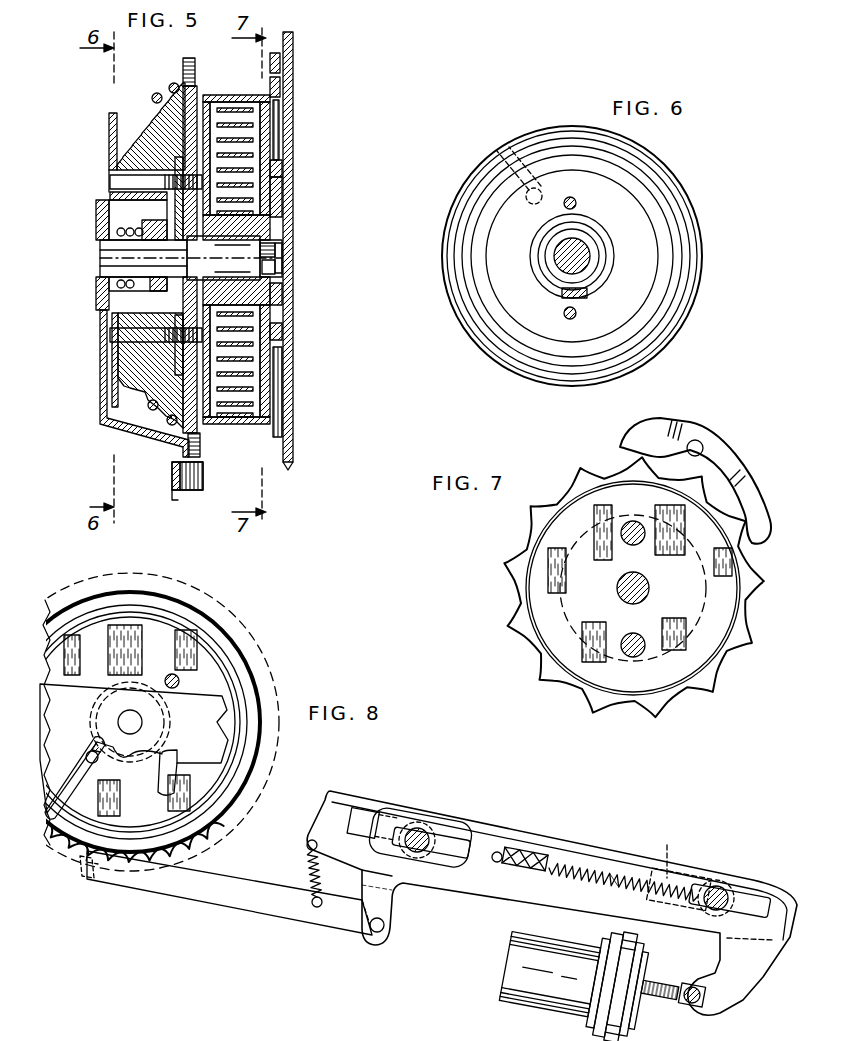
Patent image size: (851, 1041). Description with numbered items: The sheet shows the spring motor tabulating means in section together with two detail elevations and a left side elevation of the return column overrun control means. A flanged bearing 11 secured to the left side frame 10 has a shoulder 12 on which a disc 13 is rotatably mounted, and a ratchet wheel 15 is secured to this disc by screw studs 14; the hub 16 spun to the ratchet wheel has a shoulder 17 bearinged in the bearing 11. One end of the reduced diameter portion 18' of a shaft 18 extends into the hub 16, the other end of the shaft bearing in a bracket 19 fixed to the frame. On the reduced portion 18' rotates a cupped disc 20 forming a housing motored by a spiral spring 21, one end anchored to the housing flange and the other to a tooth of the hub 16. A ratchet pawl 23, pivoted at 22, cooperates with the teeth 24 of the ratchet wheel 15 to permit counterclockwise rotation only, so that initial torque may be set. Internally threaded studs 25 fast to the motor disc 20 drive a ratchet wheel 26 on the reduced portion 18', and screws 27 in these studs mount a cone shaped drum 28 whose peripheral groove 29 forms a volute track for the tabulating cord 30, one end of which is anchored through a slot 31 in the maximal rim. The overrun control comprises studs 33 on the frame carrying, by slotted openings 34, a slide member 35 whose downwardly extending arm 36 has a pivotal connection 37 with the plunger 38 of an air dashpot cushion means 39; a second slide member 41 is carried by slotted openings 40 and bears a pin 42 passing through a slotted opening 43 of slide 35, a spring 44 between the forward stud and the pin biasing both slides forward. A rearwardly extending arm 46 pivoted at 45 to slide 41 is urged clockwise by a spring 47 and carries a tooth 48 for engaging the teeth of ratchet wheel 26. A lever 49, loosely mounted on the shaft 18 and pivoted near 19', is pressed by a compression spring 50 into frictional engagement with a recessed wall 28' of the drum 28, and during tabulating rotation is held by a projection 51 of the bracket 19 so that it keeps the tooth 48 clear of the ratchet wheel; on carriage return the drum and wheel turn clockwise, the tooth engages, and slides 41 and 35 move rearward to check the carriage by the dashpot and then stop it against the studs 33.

In FIG. 5, the left side frame 10 is at (293, 408).
In FIG. 5, the flanged bearing 11 is at (282, 200).
In FIG. 5, the shoulder 12 is at (282, 268).
In FIG. 5, the disc 13 is at (282, 292).
In FIG. 5, the screw studs 14 is at (282, 170).
In FIG. 7, the screw studs 14 is at (615, 520).
In FIG. 5, the ratchet wheel 15 is at (276, 110).
In FIG. 7, the ratchet wheel 15 is at (560, 537).
In FIG. 5, the hub 16 is at (270, 226).
In FIG. 5, the shoulder 17 is at (275, 248).
In FIG. 5, the shaft 18 is at (171, 258).
In FIG. 6, the shaft 18 is at (561, 256).
In FIG. 8, the shaft 18 is at (130, 700).
In FIG. 5, the reduced diameter portion 18' is at (314, 253).
In FIG. 7, the reduced diameter portion 18' is at (656, 588).
In FIG. 5, the bracket 19 is at (113, 240).
In FIG. 8, the bracket 19 is at (134, 725).
In FIG. 8, the pivot 19' is at (76, 745).
In FIG. 5, the cupped disc 20 is at (242, 78).
In FIG. 5, the spiral spring 21 is at (248, 135).
In FIG. 7, the pivot 22 is at (705, 448).
In FIG. 5, the ratchet pawl 23 is at (280, 60).
In FIG. 7, the ratchet pawl 23 is at (685, 432).
In FIG. 7, the teeth 24 is at (590, 475).
In FIG. 5, the internally threaded studs 25 is at (180, 158).
In FIG. 5, the ratchet wheel 26 is at (200, 445).
In FIG. 8, the ratchet wheel 26 is at (213, 853).
In FIG. 5, the screws 27 is at (125, 181).
In FIG. 6, the screws 27 is at (564, 206).
In FIG. 8, the screws 27 is at (175, 675).
In FIG. 5, the cone shaped drum 28 is at (90, 260).
In FIG. 6, the cone shaped drum 28 is at (583, 256).
In FIG. 8, the cone shaped drum 28 is at (156, 722).
In FIG. 5, the recessed wall 28' is at (112, 201).
In FIG. 5, the groove 29 is at (145, 108).
In FIG. 5, the tabulating cord 30 is at (176, 84).
In FIG. 6, the slot 31 is at (502, 153).
In FIG. 8, the studs 33 is at (415, 828).
In FIG. 8, the slotted openings 34 is at (455, 840).
In FIG. 8, the slide member 35 is at (565, 866).
In FIG. 8, the downwardly extending arm 36 is at (758, 972).
In FIG. 8, the pivotal connection 37 is at (684, 1003).
In FIG. 8, the plunger 38 is at (670, 985).
In FIG. 8, the dashpot cushion means 39 is at (572, 1005).
In FIG. 8, the slotted openings 40 is at (365, 815).
In FIG. 8, the slide member 41 is at (325, 810).
In FIG. 8, the pin 42 is at (496, 850).
In FIG. 8, the slotted opening 43 is at (528, 850).
In FIG. 8, the spring 44 is at (612, 875).
In FIG. 8, the pivot 45 is at (378, 935).
In FIG. 5, the rearwardly extending arm 46 is at (178, 500).
In FIG. 8, the rearwardly extending arm 46 is at (212, 905).
In FIG. 8, the spring 47 is at (308, 870).
In FIG. 5, the tooth 48 is at (203, 483).
In FIG. 8, the tooth 48 is at (80, 875).
In FIG. 5, the lever 49 is at (103, 405).
In FIG. 8, the lever 49 is at (95, 800).
In FIG. 5, the compression spring 50 is at (115, 295).
In FIG. 6, the compression spring 50 is at (592, 262).
In FIG. 8, the projection 51 is at (162, 790).